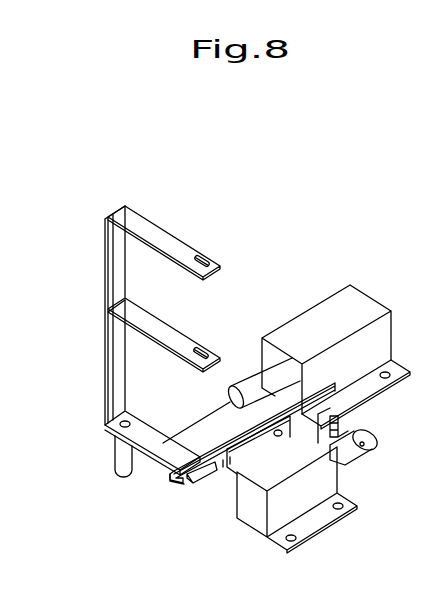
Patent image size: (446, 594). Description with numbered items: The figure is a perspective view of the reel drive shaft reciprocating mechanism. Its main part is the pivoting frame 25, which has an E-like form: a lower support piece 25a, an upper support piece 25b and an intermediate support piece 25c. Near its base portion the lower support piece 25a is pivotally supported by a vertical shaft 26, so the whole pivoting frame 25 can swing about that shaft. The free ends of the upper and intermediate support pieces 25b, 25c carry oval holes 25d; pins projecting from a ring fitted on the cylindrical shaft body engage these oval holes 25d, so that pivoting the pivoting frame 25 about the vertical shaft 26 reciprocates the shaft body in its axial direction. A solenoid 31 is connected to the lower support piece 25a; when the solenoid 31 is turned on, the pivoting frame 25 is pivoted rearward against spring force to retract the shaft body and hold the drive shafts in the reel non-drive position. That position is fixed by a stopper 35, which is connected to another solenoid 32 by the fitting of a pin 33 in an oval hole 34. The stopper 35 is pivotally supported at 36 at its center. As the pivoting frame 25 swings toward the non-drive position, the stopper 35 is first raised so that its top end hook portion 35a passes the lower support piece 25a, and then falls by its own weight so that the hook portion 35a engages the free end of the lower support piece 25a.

The pivoting frame 25 is at (151, 336).
The lower support piece 25a is at (165, 433).
The upper support piece 25b is at (183, 278).
The intermediate support piece 25c is at (156, 325).
The oval holes 25d is at (206, 252).
The vertical shaft 26 is at (115, 463).
The solenoid 31 is at (318, 349).
The another solenoid 32 is at (288, 485).
The pin 33 is at (347, 428).
The oval hole 34 is at (340, 407).
The stopper 35 is at (241, 455).
The top end hook portion 35a is at (168, 501).
The pivot support 36 is at (279, 436).